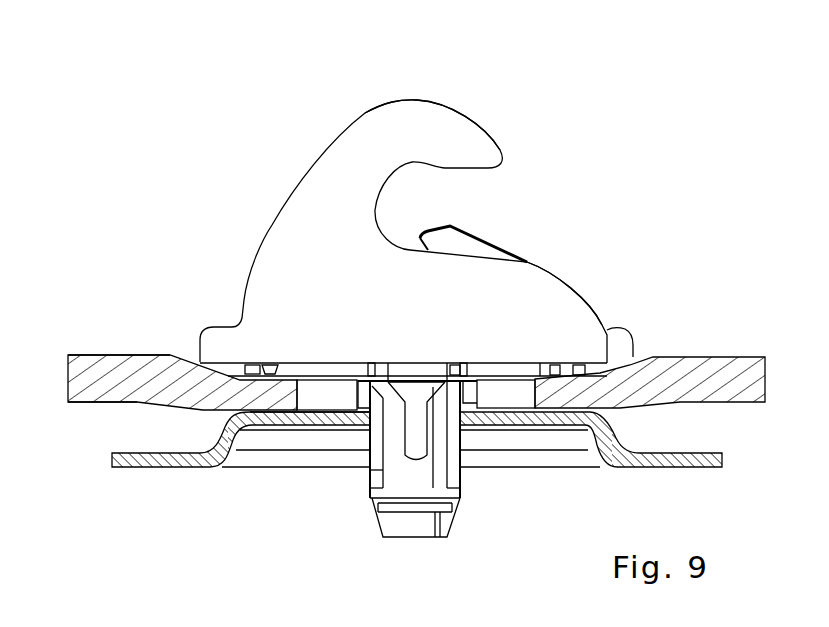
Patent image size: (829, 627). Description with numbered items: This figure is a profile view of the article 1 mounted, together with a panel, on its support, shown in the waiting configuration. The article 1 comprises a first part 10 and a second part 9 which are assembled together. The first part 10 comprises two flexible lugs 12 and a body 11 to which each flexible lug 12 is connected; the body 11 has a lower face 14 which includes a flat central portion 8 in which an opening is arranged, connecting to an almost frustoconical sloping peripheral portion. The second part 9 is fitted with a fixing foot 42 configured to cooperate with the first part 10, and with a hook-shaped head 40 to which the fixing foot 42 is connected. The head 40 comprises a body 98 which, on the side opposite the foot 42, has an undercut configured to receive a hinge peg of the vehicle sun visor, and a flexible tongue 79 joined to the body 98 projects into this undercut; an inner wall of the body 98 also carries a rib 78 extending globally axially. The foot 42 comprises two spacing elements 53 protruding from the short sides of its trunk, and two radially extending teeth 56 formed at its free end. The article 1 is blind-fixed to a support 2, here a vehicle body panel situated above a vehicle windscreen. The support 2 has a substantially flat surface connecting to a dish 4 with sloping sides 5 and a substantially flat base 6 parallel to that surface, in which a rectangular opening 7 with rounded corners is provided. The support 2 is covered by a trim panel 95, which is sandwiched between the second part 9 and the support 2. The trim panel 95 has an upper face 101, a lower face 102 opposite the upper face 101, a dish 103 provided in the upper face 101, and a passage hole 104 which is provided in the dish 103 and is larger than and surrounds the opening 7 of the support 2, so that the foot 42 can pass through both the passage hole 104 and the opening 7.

The article 1 is at (603, 207).
The support 2 is at (110, 469).
The dish 4 is at (294, 472).
The sloping sides 5 is at (597, 444).
The flat base 6 is at (268, 428).
The rectangular opening 7 is at (368, 440).
The flat central portion 8 is at (521, 378).
The second part 9 is at (528, 513).
The first part 10 is at (247, 163).
The body 11 is at (310, 371).
The flexible lugs 12 is at (455, 530).
The lower face 14 is at (487, 372).
The head 40 is at (440, 100).
The fixing foot 42 is at (392, 502).
The spacing elements 53 is at (455, 437).
The teeth 56 is at (458, 508).
The rib 78 is at (393, 371).
The flexible tongue 79 is at (463, 241).
The trim panel 95 is at (85, 358).
The body 98 is at (540, 286).
The upper face 101 is at (112, 355).
The lower face 102 is at (88, 404).
The dish 103 is at (605, 330).
The passage hole 104 is at (311, 403).